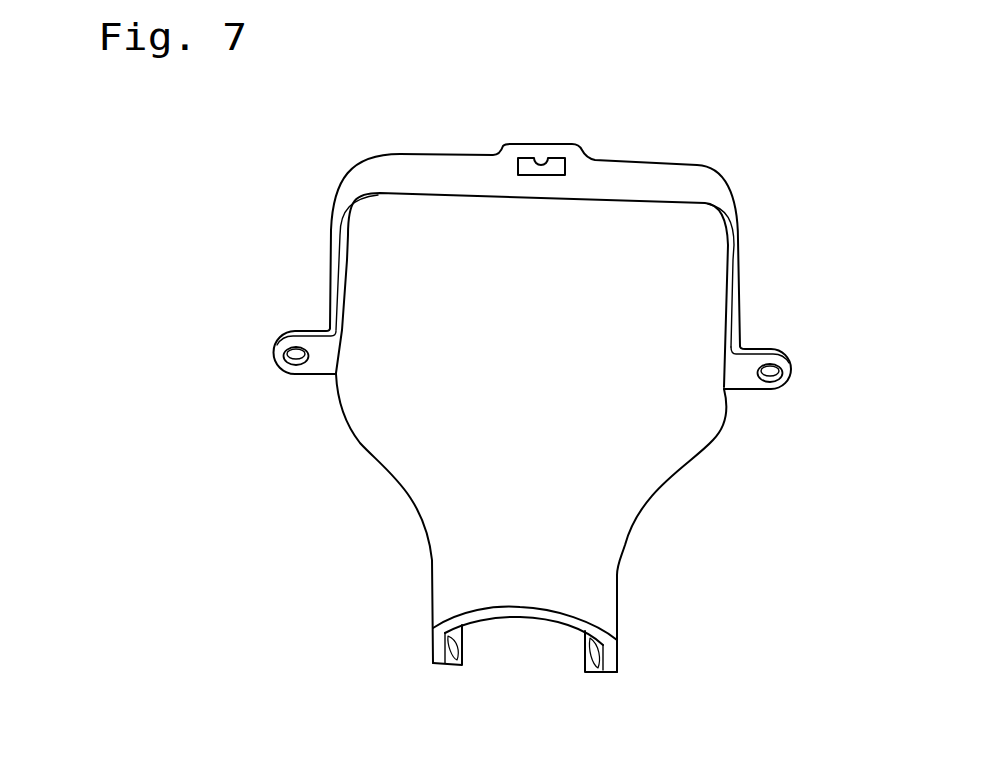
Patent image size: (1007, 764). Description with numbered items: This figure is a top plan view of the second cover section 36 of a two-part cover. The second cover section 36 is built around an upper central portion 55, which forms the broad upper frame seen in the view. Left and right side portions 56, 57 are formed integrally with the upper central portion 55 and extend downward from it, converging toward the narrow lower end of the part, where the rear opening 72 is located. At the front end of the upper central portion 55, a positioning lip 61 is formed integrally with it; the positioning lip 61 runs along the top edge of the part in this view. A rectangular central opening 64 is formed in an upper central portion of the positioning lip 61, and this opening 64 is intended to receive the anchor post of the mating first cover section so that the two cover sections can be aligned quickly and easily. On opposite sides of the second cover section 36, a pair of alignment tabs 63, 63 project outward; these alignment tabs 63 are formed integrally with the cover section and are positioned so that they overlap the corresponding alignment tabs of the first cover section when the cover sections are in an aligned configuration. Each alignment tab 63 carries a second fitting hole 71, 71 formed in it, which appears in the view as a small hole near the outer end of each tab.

The second cover section 36 is at (376, 145).
The upper central portion 55 is at (464, 252).
The left side portion 56 is at (356, 402).
The right side portion 57 is at (700, 406).
The positioning lip 61 is at (703, 167).
The alignment tab 63 is at (297, 330).
The rectangular central opening 64 is at (547, 160).
The second fitting hole 71 is at (283, 357).
The rear opening 72 is at (497, 625).